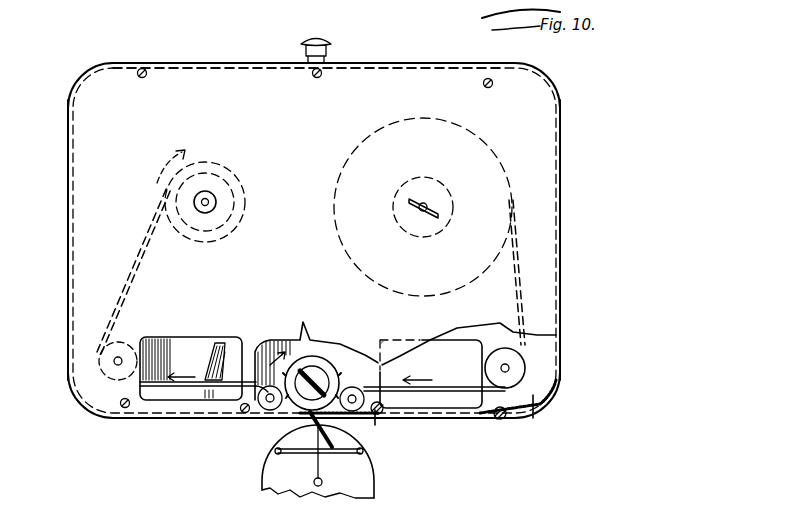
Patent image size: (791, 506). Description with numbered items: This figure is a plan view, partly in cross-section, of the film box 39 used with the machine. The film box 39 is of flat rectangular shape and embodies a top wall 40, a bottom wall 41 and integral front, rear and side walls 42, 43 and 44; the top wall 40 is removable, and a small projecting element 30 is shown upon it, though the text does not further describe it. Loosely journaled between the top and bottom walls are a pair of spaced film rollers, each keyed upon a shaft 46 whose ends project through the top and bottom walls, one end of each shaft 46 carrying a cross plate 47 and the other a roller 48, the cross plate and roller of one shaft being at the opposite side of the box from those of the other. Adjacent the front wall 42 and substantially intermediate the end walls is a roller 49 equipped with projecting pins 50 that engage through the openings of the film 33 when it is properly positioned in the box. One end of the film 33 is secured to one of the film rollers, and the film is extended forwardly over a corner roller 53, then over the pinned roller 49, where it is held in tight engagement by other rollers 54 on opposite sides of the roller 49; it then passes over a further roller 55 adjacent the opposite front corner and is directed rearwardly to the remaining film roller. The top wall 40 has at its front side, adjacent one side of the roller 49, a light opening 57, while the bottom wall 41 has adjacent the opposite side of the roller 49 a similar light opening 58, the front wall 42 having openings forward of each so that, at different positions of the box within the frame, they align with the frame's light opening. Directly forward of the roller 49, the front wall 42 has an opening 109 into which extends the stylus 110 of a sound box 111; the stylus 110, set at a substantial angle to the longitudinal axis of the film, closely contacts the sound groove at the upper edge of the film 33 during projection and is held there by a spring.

The knob 30 is at (325, 40).
The film 33 is at (218, 345).
The film box 39 is at (562, 260).
The top wall 40 is at (212, 75).
The bottom wall 41 is at (533, 400).
The front wall 42 is at (375, 414).
The rear wall 43 is at (365, 73).
The side walls 44 is at (68, 240).
The shafts 46 is at (427, 203).
The cross plates 47 is at (433, 208).
The rollers 48 is at (216, 200).
The roller 49 is at (318, 362).
The projecting pins 50 is at (303, 338).
The corner roller 53 is at (503, 348).
The rollers 54 is at (356, 388).
The roller 55 is at (105, 370).
The light opening 57 is at (182, 350).
The light opening 58 is at (440, 350).
The opening 109 is at (280, 451).
The stylus 110 is at (290, 465).
The sound box 111 is at (370, 487).